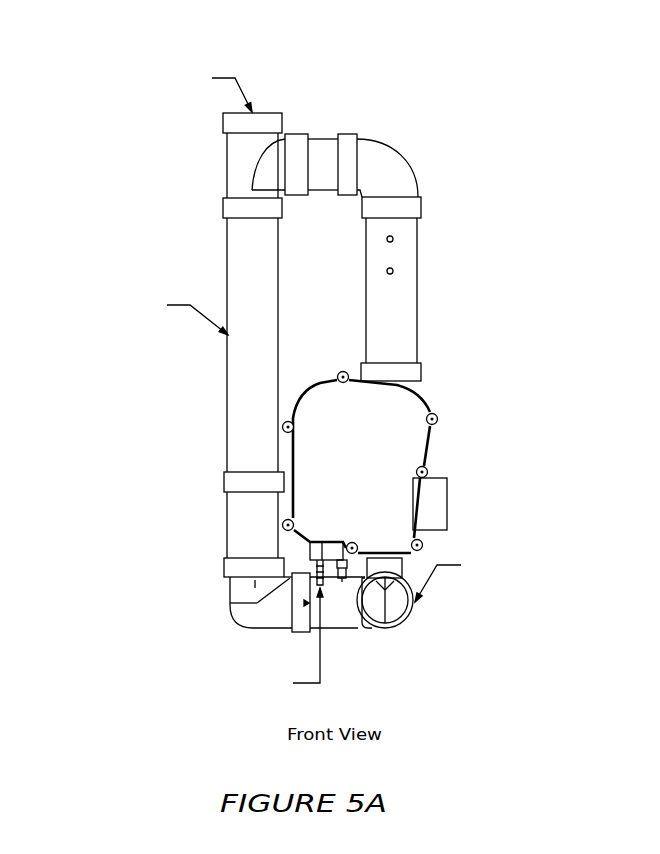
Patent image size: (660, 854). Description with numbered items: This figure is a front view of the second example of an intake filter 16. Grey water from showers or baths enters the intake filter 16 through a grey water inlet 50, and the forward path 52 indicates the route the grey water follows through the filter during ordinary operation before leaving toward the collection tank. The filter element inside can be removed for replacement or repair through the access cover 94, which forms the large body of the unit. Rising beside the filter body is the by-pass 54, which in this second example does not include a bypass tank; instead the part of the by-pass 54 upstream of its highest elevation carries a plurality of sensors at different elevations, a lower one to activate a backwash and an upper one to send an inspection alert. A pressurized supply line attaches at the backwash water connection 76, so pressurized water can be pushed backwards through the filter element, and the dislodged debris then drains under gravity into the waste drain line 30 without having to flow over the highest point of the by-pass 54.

The intake filter 16 is at (538, 298).
The waste drain line 30 is at (399, 262).
The grey water inlet 50 is at (448, 505).
The forward path 52 is at (523, 502).
The by-pass 54 is at (417, 295).
The backwash water connection 76 is at (342, 585).
The access cover 94 is at (370, 485).